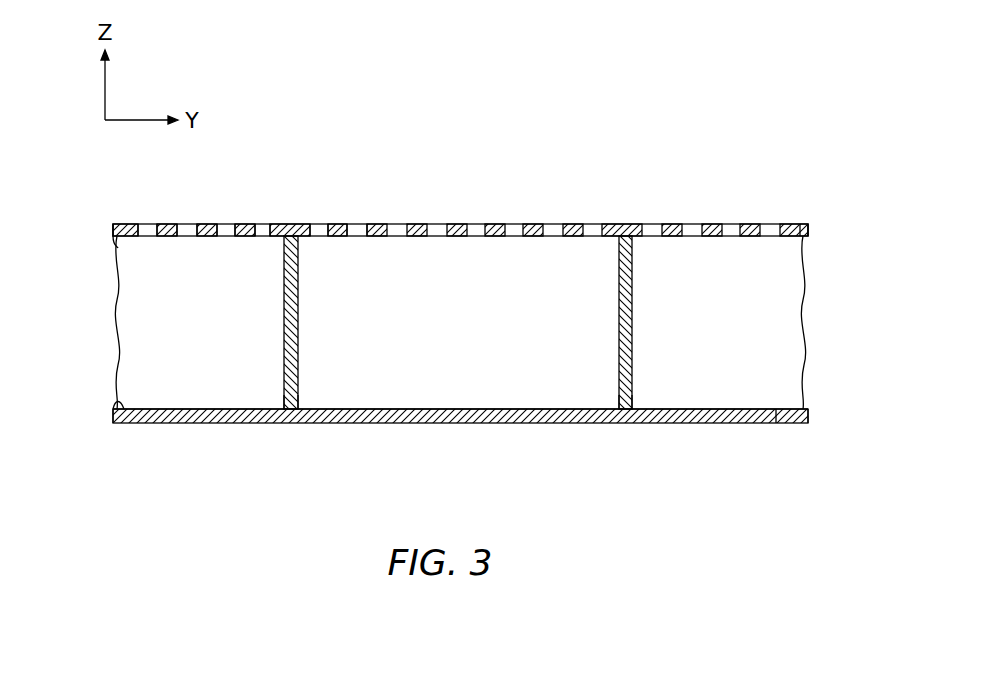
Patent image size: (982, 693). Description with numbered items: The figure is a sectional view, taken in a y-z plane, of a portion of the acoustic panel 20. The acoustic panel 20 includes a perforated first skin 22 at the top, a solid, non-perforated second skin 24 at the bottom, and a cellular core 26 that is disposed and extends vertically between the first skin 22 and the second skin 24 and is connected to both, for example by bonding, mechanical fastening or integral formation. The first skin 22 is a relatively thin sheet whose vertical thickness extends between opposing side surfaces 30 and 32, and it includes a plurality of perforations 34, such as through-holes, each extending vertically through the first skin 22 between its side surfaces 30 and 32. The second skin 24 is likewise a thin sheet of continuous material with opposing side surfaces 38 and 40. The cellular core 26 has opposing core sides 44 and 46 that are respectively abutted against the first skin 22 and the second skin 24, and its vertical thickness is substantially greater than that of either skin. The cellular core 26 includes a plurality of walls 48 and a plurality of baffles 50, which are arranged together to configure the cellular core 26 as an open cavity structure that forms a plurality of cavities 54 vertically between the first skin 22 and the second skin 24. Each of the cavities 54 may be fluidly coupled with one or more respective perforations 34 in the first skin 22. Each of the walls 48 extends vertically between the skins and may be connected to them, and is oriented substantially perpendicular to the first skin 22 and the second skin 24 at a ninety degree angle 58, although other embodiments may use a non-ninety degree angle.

The acoustic panel 20 is at (762, 135).
The first skin 22 is at (113, 232).
The second skin 24 is at (113, 416).
The cellular core 26 is at (111, 317).
The side surface 30 is at (124, 223).
The side surface 32 is at (117, 257).
The perforations 34 is at (193, 224).
The side surface 38 is at (128, 424).
The side surface 40 is at (116, 402).
The core side 44 is at (793, 223).
The core side 46 is at (777, 424).
The walls 48 is at (284, 393).
The baffles 50 is at (200, 377).
The cavities 54 is at (184, 329).
The ninety degree angle 58 is at (298, 260).